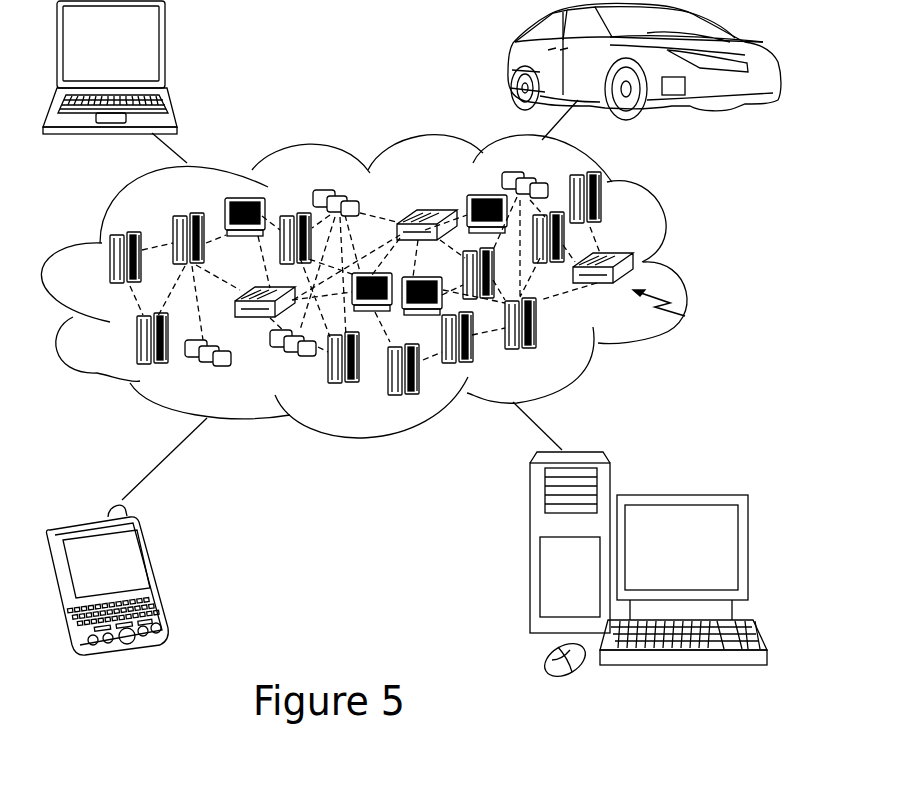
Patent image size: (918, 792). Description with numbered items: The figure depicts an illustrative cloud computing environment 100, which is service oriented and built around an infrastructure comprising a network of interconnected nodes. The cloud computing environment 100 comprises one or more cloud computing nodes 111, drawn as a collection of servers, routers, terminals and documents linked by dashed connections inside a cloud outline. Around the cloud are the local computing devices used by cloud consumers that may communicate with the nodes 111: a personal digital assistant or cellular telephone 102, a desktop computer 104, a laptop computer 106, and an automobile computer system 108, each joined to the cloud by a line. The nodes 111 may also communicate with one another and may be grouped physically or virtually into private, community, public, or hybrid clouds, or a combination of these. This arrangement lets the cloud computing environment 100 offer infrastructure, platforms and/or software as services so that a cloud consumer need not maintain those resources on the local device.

The cloud computing environment 100 is at (678, 263).
The personal digital assistant (PDA) or cellular telephone 102 is at (152, 572).
The desktop computer 104 is at (680, 492).
The laptop computer 106 is at (166, 51).
The automobile computer system 108 is at (508, 63).
The cloud computing nodes 111 is at (686, 311).